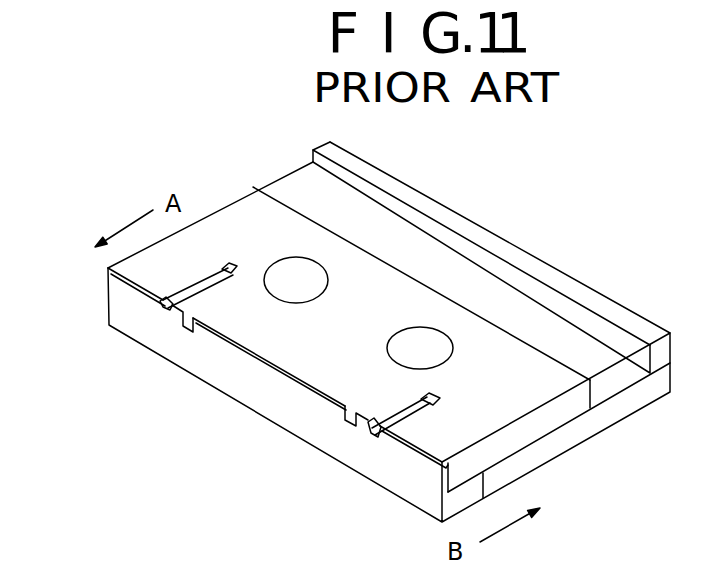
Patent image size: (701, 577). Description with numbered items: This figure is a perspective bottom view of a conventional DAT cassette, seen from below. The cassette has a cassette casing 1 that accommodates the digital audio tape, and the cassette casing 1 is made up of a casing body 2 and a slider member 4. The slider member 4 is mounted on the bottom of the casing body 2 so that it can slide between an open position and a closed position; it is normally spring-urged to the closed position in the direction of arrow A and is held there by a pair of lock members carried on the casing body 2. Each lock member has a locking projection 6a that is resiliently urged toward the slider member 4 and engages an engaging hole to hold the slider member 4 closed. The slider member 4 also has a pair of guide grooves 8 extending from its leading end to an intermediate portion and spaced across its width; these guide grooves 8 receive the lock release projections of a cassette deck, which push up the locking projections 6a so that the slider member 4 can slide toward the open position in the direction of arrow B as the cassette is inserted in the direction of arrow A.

The cassette casing 1 is at (527, 234).
The casing body 2 is at (452, 220).
The slider member 4 is at (517, 345).
The locking projection 6a is at (226, 264).
The guide groove 8 is at (190, 282).